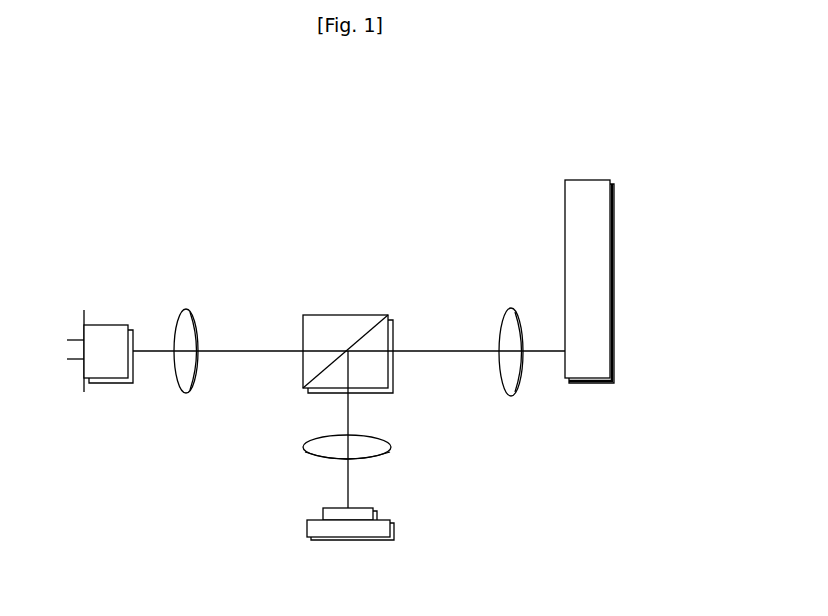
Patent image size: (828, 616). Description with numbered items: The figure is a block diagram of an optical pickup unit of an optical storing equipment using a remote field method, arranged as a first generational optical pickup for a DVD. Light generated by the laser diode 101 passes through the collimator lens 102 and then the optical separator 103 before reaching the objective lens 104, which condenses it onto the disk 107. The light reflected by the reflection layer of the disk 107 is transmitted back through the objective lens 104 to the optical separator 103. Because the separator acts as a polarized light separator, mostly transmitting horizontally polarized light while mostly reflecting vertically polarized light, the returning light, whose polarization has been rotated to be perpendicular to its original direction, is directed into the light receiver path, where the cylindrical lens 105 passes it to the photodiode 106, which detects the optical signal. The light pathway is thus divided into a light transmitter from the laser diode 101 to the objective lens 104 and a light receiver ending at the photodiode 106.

The laser diode 101 is at (120, 323).
The collimator lens 102 is at (183, 310).
The optical separator 103 is at (375, 315).
The objective lens 104 is at (512, 308).
The cylindrical lens 105 is at (380, 440).
The photodiode 106 is at (382, 517).
The disk 107 is at (600, 180).